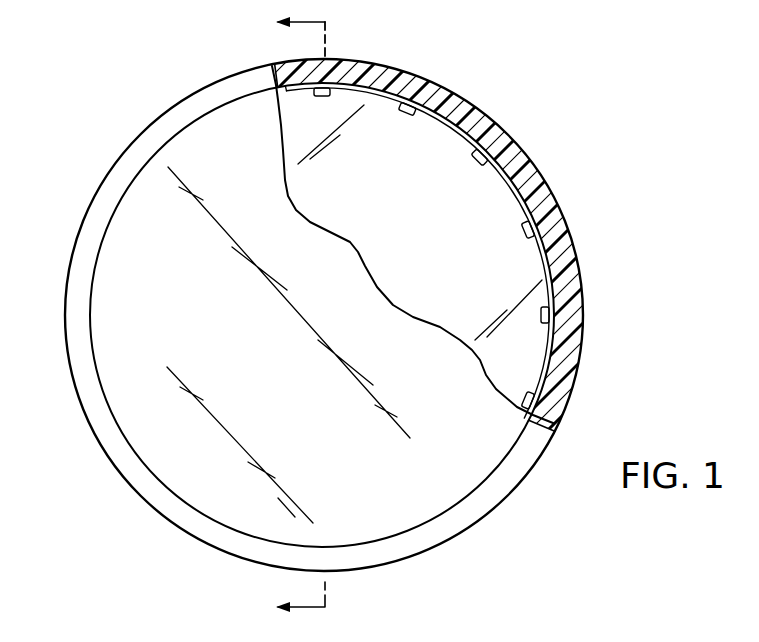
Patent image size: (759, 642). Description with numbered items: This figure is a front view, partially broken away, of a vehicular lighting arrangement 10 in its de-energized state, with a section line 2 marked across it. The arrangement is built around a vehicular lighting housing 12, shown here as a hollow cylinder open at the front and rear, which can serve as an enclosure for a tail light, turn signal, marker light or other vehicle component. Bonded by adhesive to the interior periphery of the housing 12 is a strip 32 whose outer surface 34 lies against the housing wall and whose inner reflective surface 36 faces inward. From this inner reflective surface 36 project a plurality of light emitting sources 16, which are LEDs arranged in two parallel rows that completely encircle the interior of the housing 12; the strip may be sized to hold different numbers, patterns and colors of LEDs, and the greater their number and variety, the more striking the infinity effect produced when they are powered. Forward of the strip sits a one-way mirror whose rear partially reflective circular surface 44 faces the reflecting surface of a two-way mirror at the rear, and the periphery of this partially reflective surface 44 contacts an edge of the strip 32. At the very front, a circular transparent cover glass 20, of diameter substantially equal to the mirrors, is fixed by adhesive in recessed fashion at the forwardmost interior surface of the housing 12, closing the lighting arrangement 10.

The vehicular lighting arrangement 10 is at (523, 113).
The vehicular lighting housing 12 is at (548, 178).
The light emitting sources 16 is at (326, 98).
The cover glass 20 is at (140, 267).
The strip 32 is at (515, 203).
The outer surface 34 is at (410, 70).
The inner reflective surface 36 is at (545, 250).
The rear partially reflective circular surface 44 is at (416, 253).
The section line 2- 2 is at (301, 321).